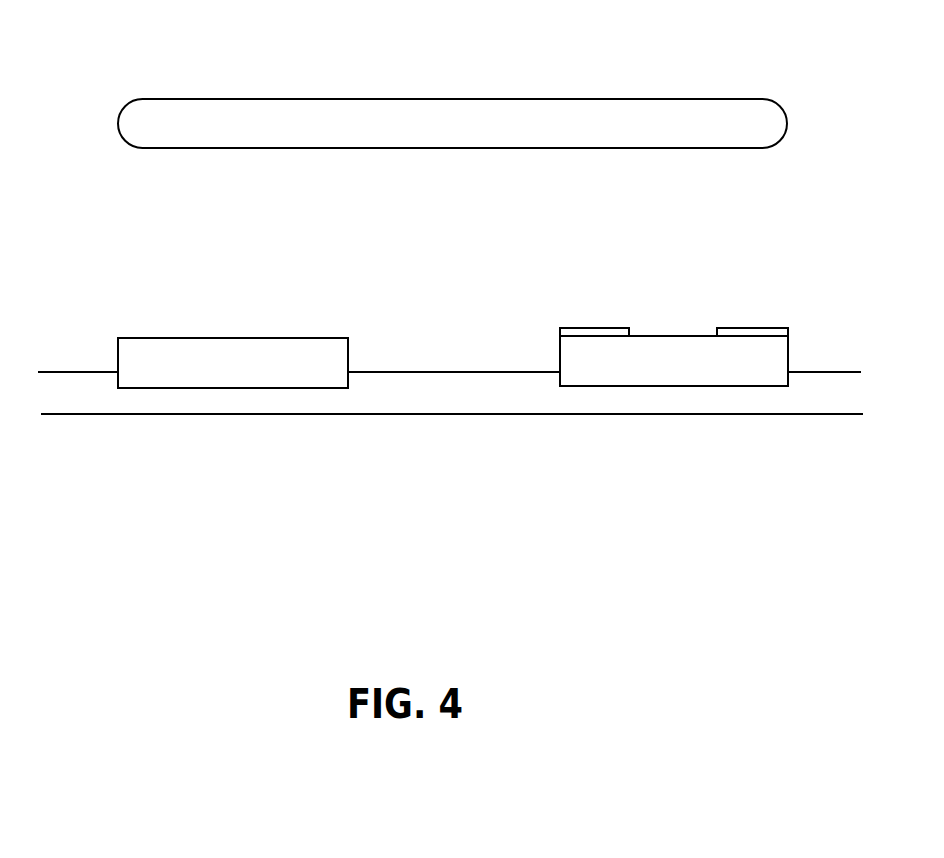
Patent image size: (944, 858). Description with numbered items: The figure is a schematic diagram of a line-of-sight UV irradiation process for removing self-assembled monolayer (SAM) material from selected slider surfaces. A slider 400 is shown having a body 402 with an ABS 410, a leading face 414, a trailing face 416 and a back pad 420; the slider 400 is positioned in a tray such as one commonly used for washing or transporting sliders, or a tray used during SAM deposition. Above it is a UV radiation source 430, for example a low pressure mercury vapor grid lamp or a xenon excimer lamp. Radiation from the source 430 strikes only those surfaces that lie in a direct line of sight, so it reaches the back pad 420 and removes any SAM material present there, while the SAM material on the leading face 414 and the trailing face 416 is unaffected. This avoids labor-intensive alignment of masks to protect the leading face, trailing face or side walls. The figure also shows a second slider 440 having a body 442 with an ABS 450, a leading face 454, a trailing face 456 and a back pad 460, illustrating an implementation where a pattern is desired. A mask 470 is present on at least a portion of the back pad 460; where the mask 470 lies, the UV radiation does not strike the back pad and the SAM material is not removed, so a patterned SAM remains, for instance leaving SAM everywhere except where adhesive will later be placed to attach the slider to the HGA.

The UV radiation source 430 is at (315, 94).
The slider 400 is at (126, 307).
The body 402 is at (160, 333).
The ABS 410 is at (208, 388).
The leading face 414 is at (118, 352).
The trailing face 416 is at (348, 350).
The back pad 420 is at (255, 337).
The slider 440 is at (551, 324).
The body 442 is at (648, 331).
The ABS 450 is at (651, 386).
The leading face 454 is at (560, 359).
The trailing face 456 is at (788, 354).
The back pad 460 is at (674, 336).
The mask 470 is at (748, 327).